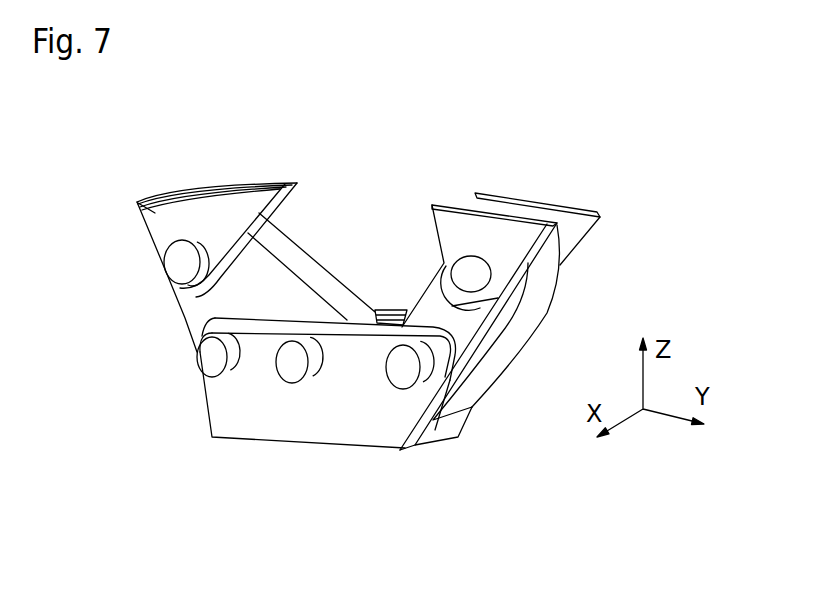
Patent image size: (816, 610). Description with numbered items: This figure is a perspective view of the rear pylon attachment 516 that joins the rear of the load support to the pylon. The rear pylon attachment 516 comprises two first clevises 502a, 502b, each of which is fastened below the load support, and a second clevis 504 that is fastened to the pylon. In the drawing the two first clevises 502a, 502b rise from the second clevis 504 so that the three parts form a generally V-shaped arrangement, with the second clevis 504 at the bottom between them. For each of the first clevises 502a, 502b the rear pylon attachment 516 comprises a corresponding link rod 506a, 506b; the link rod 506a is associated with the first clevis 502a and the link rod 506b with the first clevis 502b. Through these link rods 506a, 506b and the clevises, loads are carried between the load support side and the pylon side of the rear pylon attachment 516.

The first clevis 502a is at (136, 202).
The first clevis 502b is at (598, 215).
The second clevis 504 is at (357, 420).
The link rod 506a is at (202, 308).
The link rod 506b is at (500, 347).
The rear pylon attachment 516 is at (476, 154).